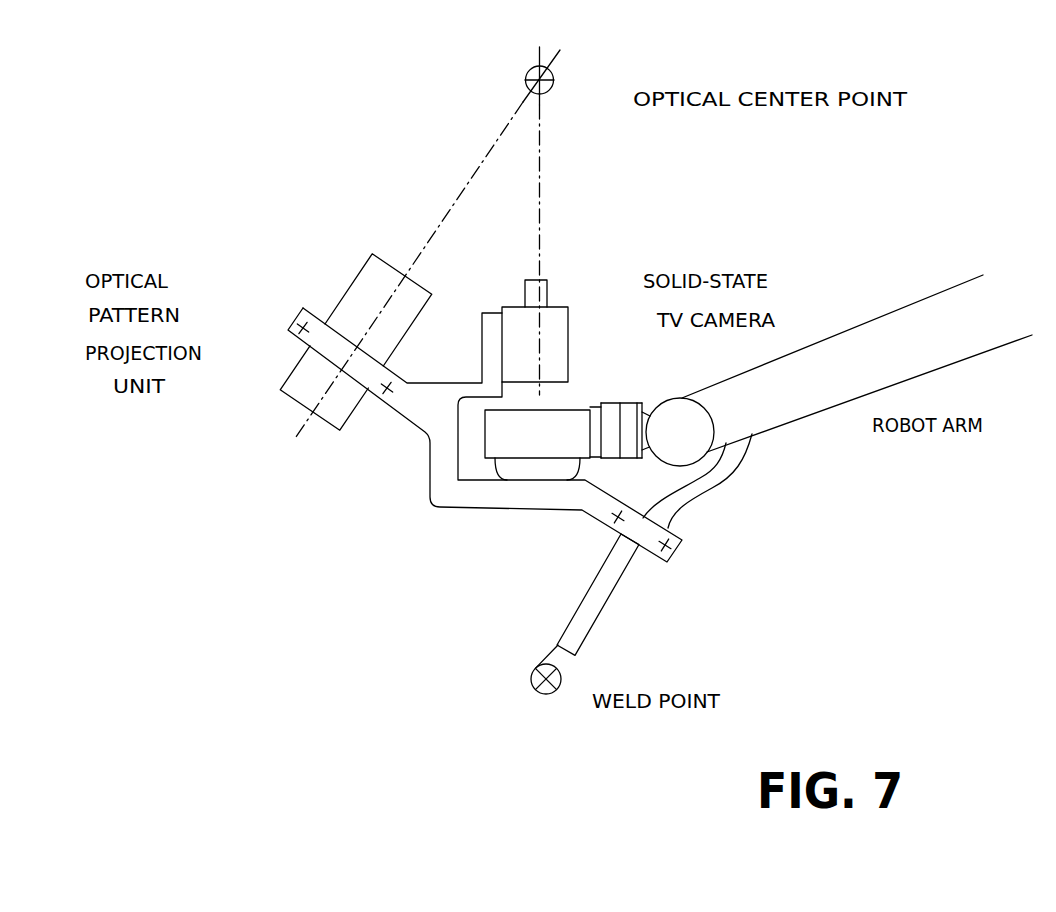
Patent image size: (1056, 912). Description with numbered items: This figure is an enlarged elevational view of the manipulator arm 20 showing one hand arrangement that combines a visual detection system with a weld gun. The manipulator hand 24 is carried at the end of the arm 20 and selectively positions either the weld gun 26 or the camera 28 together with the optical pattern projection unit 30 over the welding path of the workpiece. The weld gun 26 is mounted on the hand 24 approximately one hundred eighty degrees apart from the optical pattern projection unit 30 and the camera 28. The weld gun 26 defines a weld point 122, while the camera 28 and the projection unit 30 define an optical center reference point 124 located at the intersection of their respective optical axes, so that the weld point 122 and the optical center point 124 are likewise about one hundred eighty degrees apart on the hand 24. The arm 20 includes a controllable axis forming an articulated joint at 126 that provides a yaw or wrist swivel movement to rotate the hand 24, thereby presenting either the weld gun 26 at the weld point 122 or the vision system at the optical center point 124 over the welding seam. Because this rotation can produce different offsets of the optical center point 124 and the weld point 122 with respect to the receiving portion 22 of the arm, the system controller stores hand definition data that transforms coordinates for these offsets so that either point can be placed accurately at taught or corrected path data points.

The manipulator arm 20 is at (850, 322).
The receiving portion 22 is at (548, 410).
The manipulator hand 24 is at (428, 498).
The weld gun 26 is at (602, 613).
The camera 28 is at (568, 306).
The optical pattern projection unit 30 is at (280, 390).
The weld point 122 is at (540, 694).
The optical center reference point 124 is at (554, 70).
The articulated joint 126 is at (618, 402).